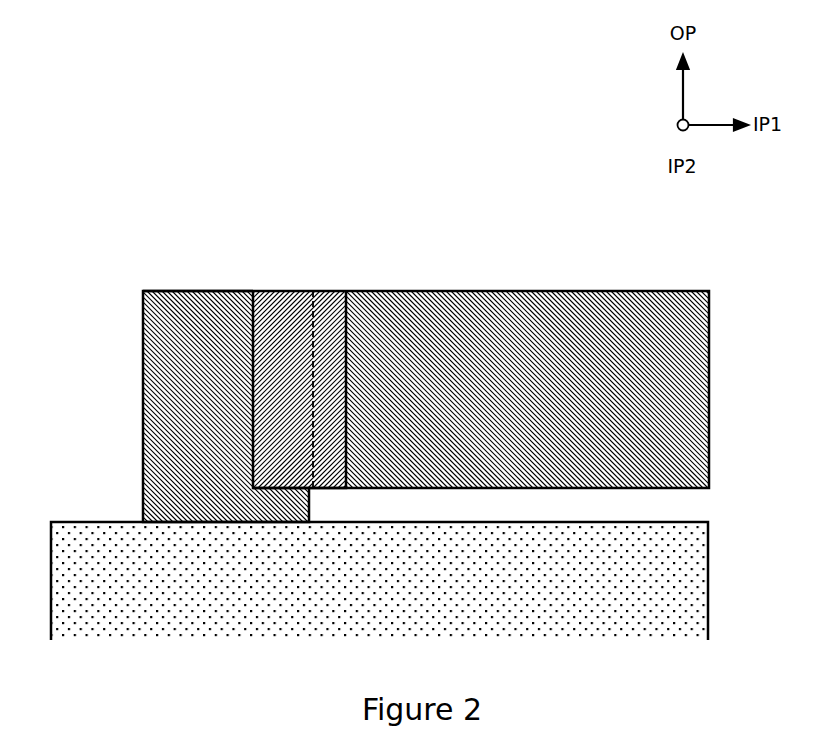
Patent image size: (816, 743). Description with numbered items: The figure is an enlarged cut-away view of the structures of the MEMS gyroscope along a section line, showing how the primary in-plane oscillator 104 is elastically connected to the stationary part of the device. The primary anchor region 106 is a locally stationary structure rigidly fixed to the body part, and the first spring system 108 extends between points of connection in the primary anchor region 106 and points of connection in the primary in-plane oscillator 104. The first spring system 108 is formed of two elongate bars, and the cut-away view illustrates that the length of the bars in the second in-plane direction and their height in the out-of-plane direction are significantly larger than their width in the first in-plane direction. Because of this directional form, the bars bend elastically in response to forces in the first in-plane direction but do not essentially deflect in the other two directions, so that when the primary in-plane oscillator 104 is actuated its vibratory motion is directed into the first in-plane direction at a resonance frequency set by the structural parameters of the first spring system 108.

The primary in-plane oscillator 104 is at (628, 302).
The primary anchor region 106 is at (143, 349).
The first spring system 108 is at (270, 299).